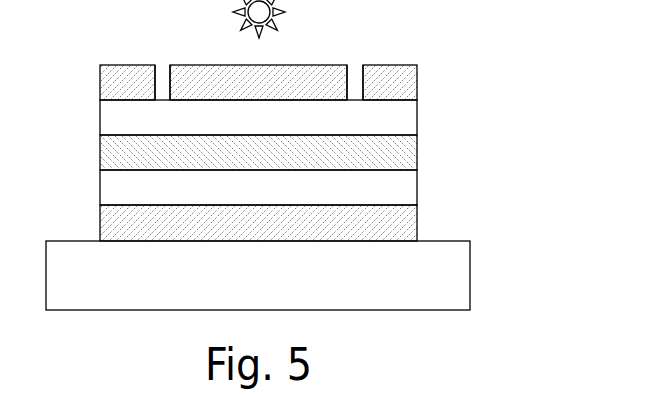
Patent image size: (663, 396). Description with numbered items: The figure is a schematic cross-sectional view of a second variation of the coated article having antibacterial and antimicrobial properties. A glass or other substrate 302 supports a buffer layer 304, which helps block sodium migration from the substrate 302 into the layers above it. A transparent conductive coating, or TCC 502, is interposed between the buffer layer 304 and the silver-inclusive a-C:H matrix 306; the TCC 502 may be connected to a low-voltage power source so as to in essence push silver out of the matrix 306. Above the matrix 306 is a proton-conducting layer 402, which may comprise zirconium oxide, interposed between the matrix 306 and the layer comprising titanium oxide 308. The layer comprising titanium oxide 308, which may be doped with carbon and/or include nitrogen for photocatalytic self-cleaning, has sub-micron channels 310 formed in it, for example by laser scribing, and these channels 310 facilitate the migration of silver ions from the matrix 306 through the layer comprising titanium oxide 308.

The substrate 302 is at (470, 277).
The buffer layer 304 is at (417, 223).
The silver-inclusive a-C:H matrix 306 is at (417, 153).
The layer comprising titanium oxide 308 is at (417, 82).
The channels 310 is at (163, 62).
The proton-conducting layer 402 is at (417, 118).
The transparent conductive coating (TCC) 502 is at (417, 188).